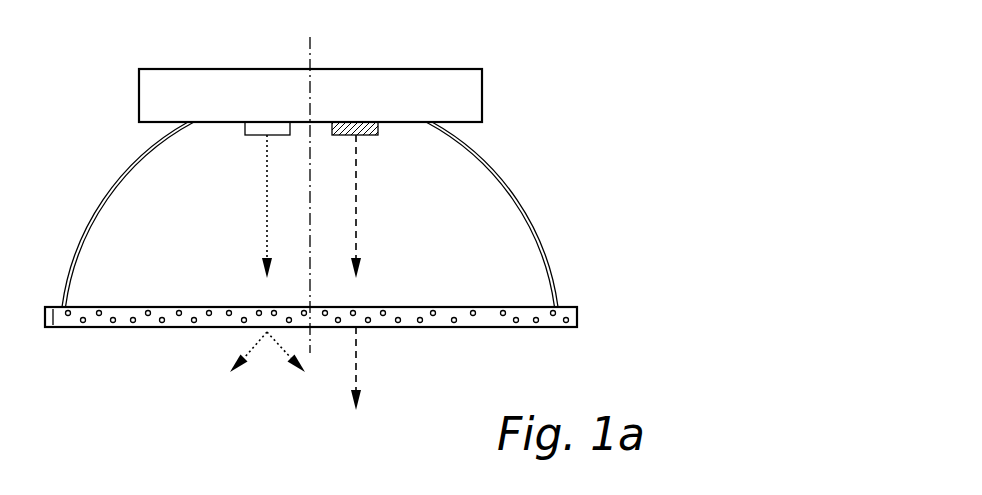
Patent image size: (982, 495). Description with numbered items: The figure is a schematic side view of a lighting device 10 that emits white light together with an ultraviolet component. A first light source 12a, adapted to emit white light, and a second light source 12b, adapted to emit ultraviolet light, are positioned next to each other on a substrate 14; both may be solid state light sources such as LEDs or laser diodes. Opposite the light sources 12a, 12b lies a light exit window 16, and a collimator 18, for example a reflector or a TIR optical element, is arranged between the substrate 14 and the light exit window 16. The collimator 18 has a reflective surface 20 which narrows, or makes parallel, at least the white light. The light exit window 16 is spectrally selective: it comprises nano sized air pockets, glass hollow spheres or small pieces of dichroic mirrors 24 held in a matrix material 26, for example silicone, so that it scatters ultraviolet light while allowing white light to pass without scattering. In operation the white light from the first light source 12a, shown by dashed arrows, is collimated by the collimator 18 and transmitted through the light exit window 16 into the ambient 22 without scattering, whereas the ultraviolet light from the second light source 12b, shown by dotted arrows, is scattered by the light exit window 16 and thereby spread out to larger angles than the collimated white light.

The lighting device 10 is at (620, 99).
The first light source 12a is at (378, 127).
The second light source 12b is at (245, 130).
The substrate 14 is at (438, 69).
The light exit window 16 is at (334, 352).
The collimator 18 is at (552, 268).
The reflective surface 20 is at (508, 190).
The ambient 22 is at (460, 395).
The air pockets or hollow spheres 24 is at (112, 324).
The matrix material 26 is at (53, 327).